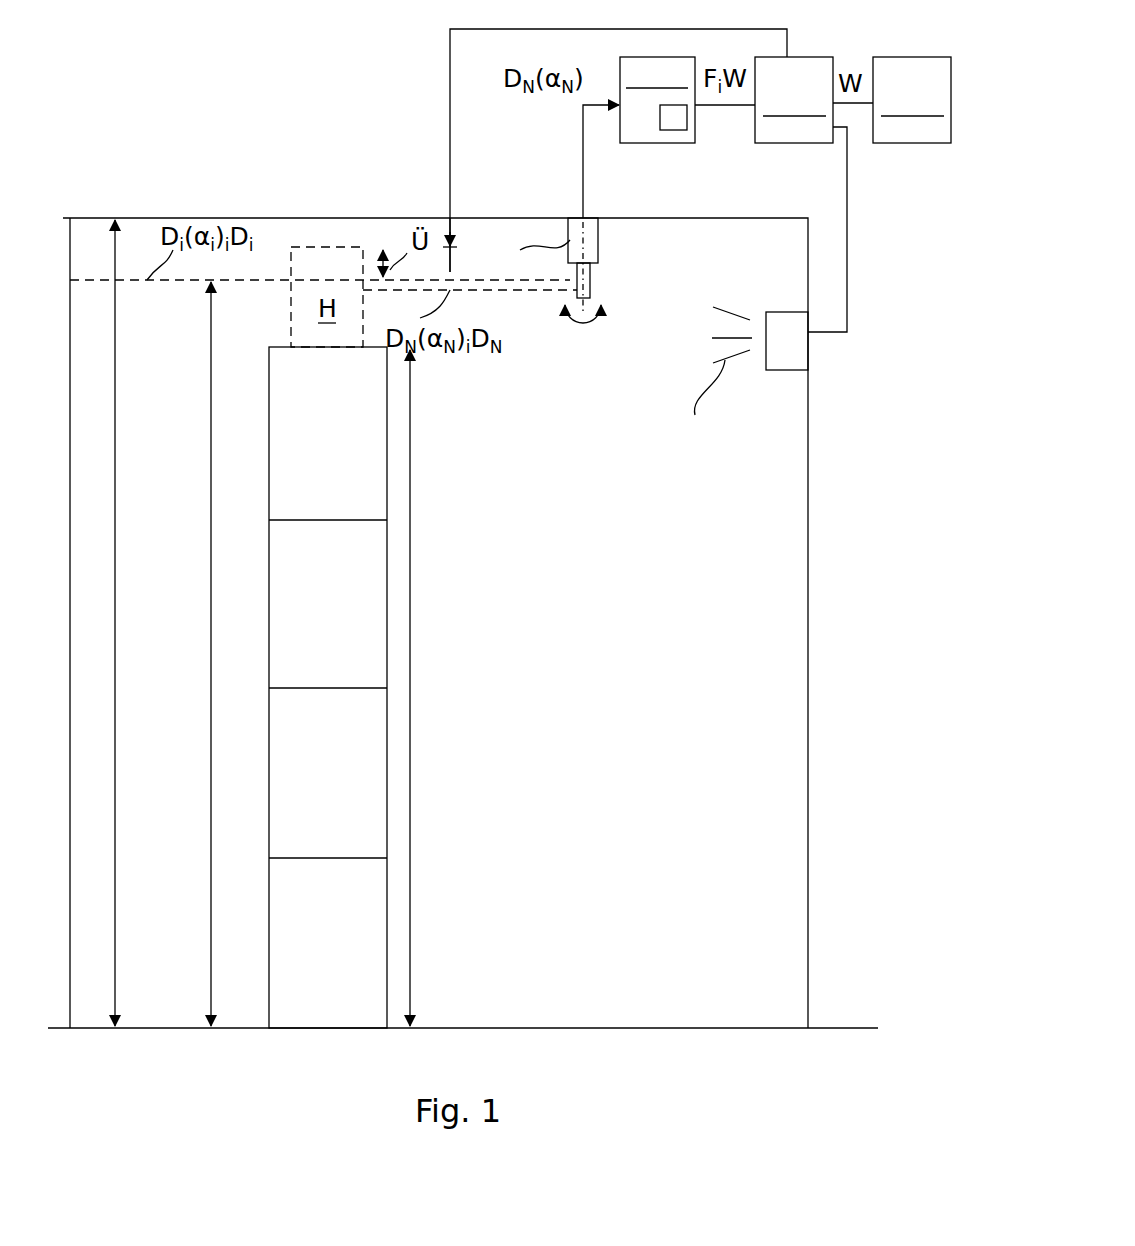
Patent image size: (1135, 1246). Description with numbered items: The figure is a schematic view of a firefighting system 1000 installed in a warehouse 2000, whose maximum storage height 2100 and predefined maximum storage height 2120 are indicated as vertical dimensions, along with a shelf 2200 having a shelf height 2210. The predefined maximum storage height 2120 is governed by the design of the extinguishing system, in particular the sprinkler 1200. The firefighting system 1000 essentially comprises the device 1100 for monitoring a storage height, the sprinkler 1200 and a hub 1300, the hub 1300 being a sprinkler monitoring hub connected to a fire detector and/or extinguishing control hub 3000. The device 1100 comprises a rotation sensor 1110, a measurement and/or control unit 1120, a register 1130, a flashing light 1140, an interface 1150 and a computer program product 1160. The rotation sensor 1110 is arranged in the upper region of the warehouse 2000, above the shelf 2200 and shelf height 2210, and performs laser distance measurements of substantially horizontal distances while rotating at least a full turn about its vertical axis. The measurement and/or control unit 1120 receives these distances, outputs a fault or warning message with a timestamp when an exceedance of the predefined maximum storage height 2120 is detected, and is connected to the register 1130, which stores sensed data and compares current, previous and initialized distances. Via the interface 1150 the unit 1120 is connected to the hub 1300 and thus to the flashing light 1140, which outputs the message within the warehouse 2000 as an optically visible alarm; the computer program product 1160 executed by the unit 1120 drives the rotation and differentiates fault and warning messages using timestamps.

The firefighting system 1000 is at (420, 165).
The device for monitoring a storage height 1100 is at (670, 295).
The rotation sensor 1110 is at (600, 240).
The measurement and/or control unit 1120 is at (652, 132).
The register 1130 is at (652, 156).
The computer program product 1160 is at (673, 132).
The flashing light 1140 is at (787, 372).
The interface 1150 is at (722, 107).
The sprinkler 1200 is at (460, 218).
The hub 1300 is at (794, 100).
The fire detector and/or extinguishing control hub 3000 is at (912, 100).
The warehouse 2000 is at (578, 860).
The maximum storage height 2100 is at (115, 680).
The predefined maximum storage height 2120 is at (211, 808).
The shelf 2200 is at (360, 632).
The shelf height 2210 is at (411, 680).